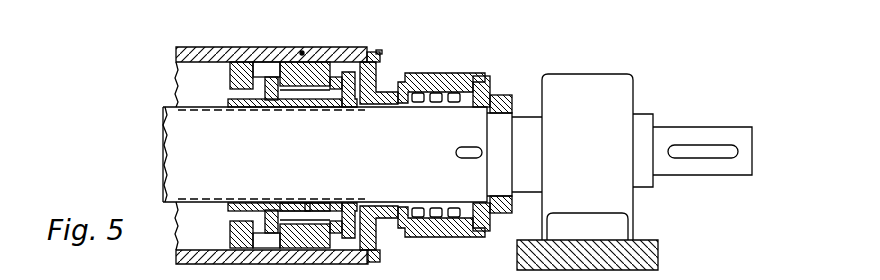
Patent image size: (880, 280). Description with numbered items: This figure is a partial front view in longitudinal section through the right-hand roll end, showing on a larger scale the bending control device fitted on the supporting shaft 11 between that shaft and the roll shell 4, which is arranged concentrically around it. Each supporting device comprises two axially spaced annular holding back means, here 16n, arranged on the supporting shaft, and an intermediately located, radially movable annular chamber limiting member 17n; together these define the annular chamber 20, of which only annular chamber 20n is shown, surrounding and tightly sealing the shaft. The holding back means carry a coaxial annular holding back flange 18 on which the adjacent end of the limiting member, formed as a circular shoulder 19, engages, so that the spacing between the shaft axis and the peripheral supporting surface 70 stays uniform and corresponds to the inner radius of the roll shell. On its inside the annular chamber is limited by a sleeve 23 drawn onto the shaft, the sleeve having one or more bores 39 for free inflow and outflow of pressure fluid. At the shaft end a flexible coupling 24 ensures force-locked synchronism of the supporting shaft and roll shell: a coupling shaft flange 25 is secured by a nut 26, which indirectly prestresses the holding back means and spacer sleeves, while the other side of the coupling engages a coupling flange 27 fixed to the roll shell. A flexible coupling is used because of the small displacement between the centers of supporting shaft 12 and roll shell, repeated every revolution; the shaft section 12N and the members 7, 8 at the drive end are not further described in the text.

The roll shell 4 is at (193, 47).
The supporting shaft 11 is at (173, 181).
The spindle section 12N is at (172, 111).
The supporting shaft 12 is at (145, 154).
The drive coupling 7 is at (634, 156).
The drive coupling 8 is at (625, 87).
The holding back flange 18 is at (252, 78).
The holding back means 16n is at (272, 104).
The annular shoulder 19 is at (258, 101).
The sleeve 23 is at (226, 106).
The annular chamber limiting member 17n is at (316, 66).
The peripheral supporting surface 70 is at (302, 52).
The annular chamber 20n is at (346, 104).
The coupling flange 27 is at (377, 68).
The flexible coupling 24 is at (458, 78).
The coupling shaft flange 25 is at (490, 97).
The nut 26 is at (505, 97).
The annular chamber 20 is at (283, 206).
The bore 39 is at (313, 203).